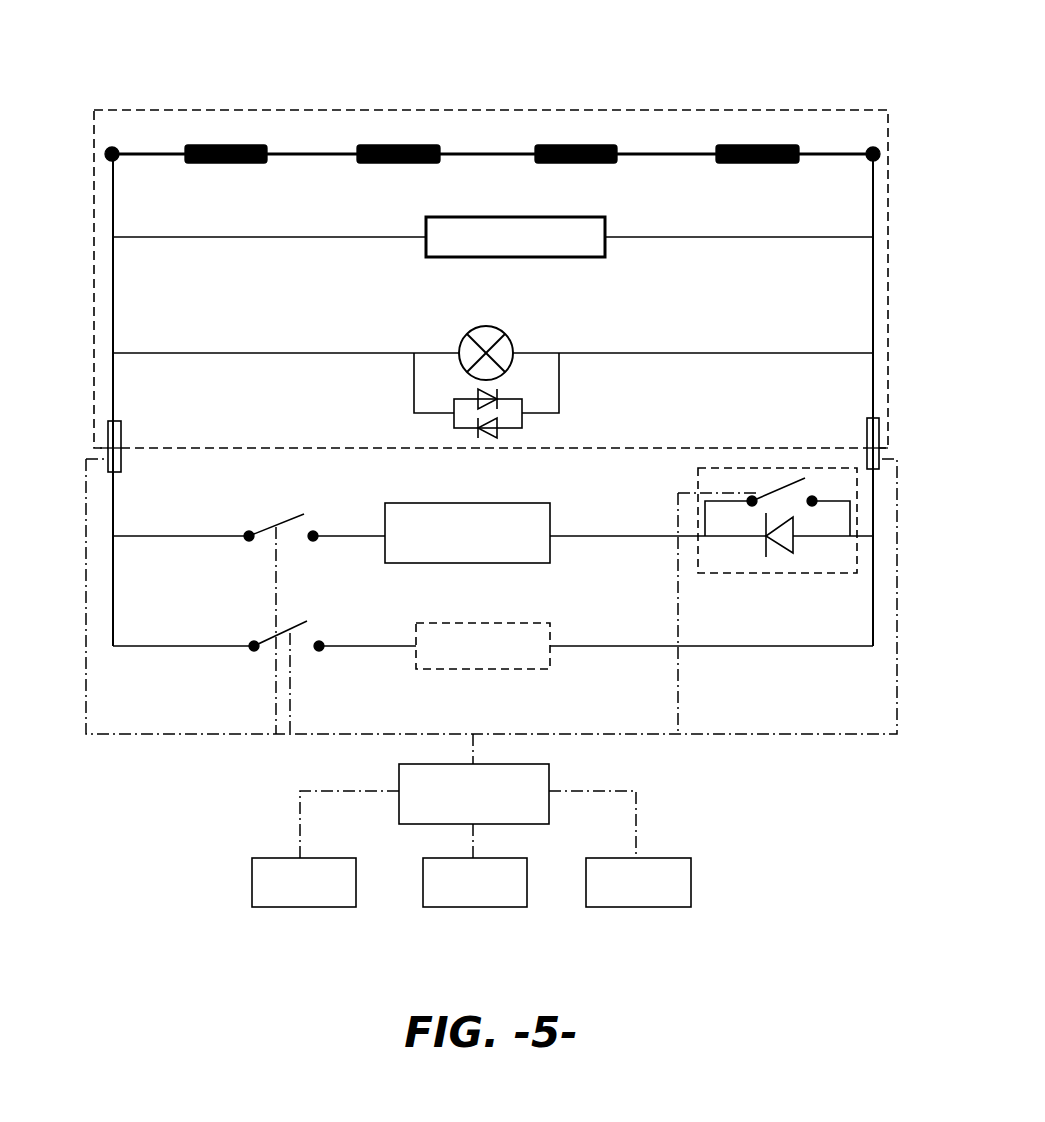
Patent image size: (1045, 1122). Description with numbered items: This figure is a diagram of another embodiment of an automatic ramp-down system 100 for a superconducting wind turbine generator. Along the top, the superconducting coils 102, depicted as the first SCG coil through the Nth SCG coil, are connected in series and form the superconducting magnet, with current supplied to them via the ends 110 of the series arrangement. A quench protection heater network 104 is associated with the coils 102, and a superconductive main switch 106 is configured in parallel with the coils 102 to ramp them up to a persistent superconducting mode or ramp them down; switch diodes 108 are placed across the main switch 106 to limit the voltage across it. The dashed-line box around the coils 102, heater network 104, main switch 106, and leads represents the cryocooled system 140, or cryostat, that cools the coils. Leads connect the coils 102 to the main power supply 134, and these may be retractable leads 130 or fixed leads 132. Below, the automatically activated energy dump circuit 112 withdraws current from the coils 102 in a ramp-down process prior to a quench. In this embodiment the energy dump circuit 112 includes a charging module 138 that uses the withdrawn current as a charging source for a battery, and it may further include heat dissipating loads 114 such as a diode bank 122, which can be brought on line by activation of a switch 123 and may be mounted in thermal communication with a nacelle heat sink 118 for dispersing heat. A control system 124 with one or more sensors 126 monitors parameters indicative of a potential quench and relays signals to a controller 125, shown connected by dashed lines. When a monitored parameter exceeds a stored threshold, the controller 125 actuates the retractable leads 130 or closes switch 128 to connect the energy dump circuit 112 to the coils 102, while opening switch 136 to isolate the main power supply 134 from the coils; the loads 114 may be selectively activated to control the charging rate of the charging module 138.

The automatic ramp-down system 100 is at (172, 66).
The superconducting coils 102 is at (250, 163).
The quench protection heater network 104 is at (437, 257).
The superconductive main switch 106 is at (490, 326).
The switch diodes 108 is at (522, 420).
The ends 110 is at (106, 155).
The energy dump circuit 112 is at (138, 526).
The heat dissipating loads 114 is at (654, 511).
The nacelle heat sink 118 is at (814, 575).
The diode bank 122 is at (778, 556).
The switch 123 is at (770, 490).
The control system 124 is at (708, 803).
The controller 125 is at (549, 778).
The sensors 126 is at (252, 875).
The switch 128 is at (259, 529).
The retractable leads 130 is at (121, 432).
The fixed leads 132 is at (108, 434).
The main power supply 134 is at (550, 663).
The switch 136 is at (264, 631).
The charging module 138 is at (430, 503).
The cryocooled system 140 is at (686, 106).